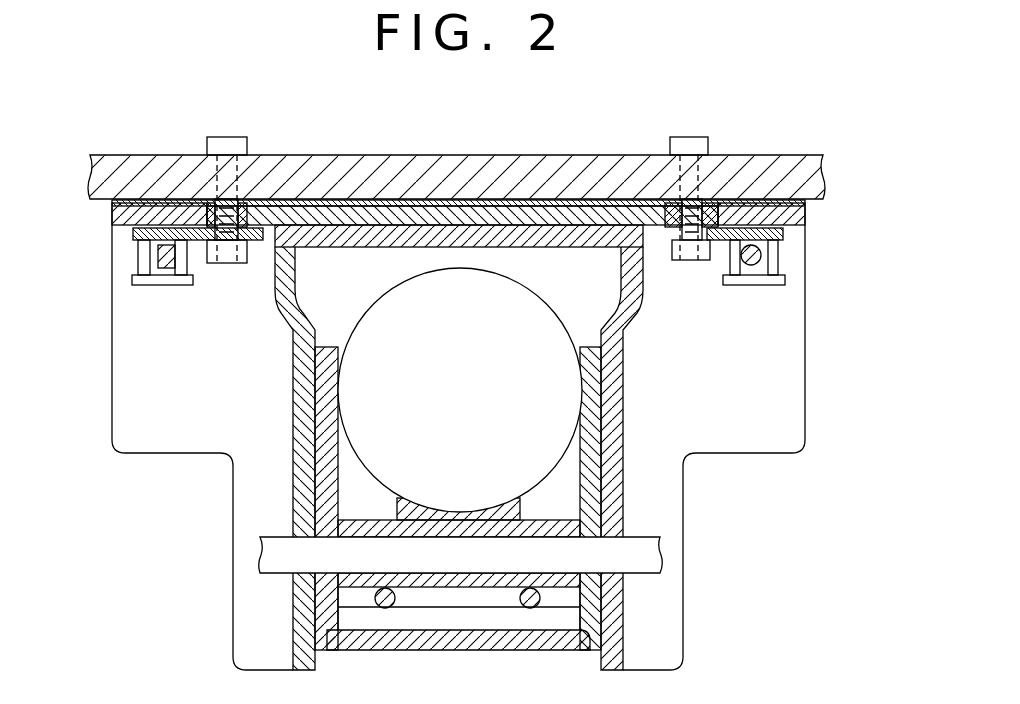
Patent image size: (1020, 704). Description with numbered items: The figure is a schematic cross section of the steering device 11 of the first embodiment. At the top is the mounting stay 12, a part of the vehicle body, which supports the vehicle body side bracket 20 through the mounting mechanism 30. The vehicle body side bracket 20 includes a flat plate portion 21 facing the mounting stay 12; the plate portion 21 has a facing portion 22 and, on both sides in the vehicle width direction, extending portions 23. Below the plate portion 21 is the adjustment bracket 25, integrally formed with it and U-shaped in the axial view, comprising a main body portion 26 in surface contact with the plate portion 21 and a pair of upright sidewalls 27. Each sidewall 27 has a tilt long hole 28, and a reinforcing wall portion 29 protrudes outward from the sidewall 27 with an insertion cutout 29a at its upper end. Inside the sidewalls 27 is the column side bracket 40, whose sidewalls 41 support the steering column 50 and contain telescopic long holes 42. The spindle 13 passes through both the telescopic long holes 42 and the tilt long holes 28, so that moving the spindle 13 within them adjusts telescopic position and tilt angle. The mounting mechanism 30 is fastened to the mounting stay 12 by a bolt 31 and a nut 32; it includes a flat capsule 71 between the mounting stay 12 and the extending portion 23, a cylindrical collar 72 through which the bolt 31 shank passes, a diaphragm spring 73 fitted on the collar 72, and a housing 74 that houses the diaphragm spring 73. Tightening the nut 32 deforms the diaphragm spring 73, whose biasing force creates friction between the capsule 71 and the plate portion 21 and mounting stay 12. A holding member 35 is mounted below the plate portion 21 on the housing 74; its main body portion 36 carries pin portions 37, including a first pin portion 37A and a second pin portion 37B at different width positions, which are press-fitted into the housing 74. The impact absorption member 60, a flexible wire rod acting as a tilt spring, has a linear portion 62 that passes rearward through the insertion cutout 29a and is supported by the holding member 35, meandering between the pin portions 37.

The steering device 11 is at (826, 133).
The mounting stay 12 is at (575, 162).
The spindle 13 is at (657, 555).
The vehicle body side bracket 20 is at (459, 438).
The plate portion 21 is at (440, 203).
The facing portion 22 is at (511, 208).
The extending portion 23 is at (118, 203).
The adjustment bracket 25 is at (355, 248).
The main body portion 26 is at (540, 248).
The sidewall 27 is at (292, 310).
The tilt long hole 28 is at (300, 480).
The wall portion 29 is at (113, 438).
The insertion cutout 29a is at (138, 264).
The mounting mechanism 30 is at (441, 186).
The bolt 31 is at (221, 137).
The nut 32 is at (236, 263).
The holding member 35 is at (122, 288).
The main body portion 36 is at (770, 285).
The pin portion 37 is at (766, 284).
The first pin portion 37A is at (735, 257).
The second pin portion 37B is at (773, 257).
The column side bracket 40 is at (470, 655).
The sidewall 41 is at (325, 405).
The telescopic long hole 42 is at (310, 540).
The steering column 50 is at (557, 333).
The impact absorption member 60 is at (479, 304).
The linear portion 62 is at (168, 285).
The capsule 71 is at (252, 200).
The collar 72 is at (207, 205).
The diaphragm spring 73 is at (262, 206).
The housing 74 is at (133, 237).